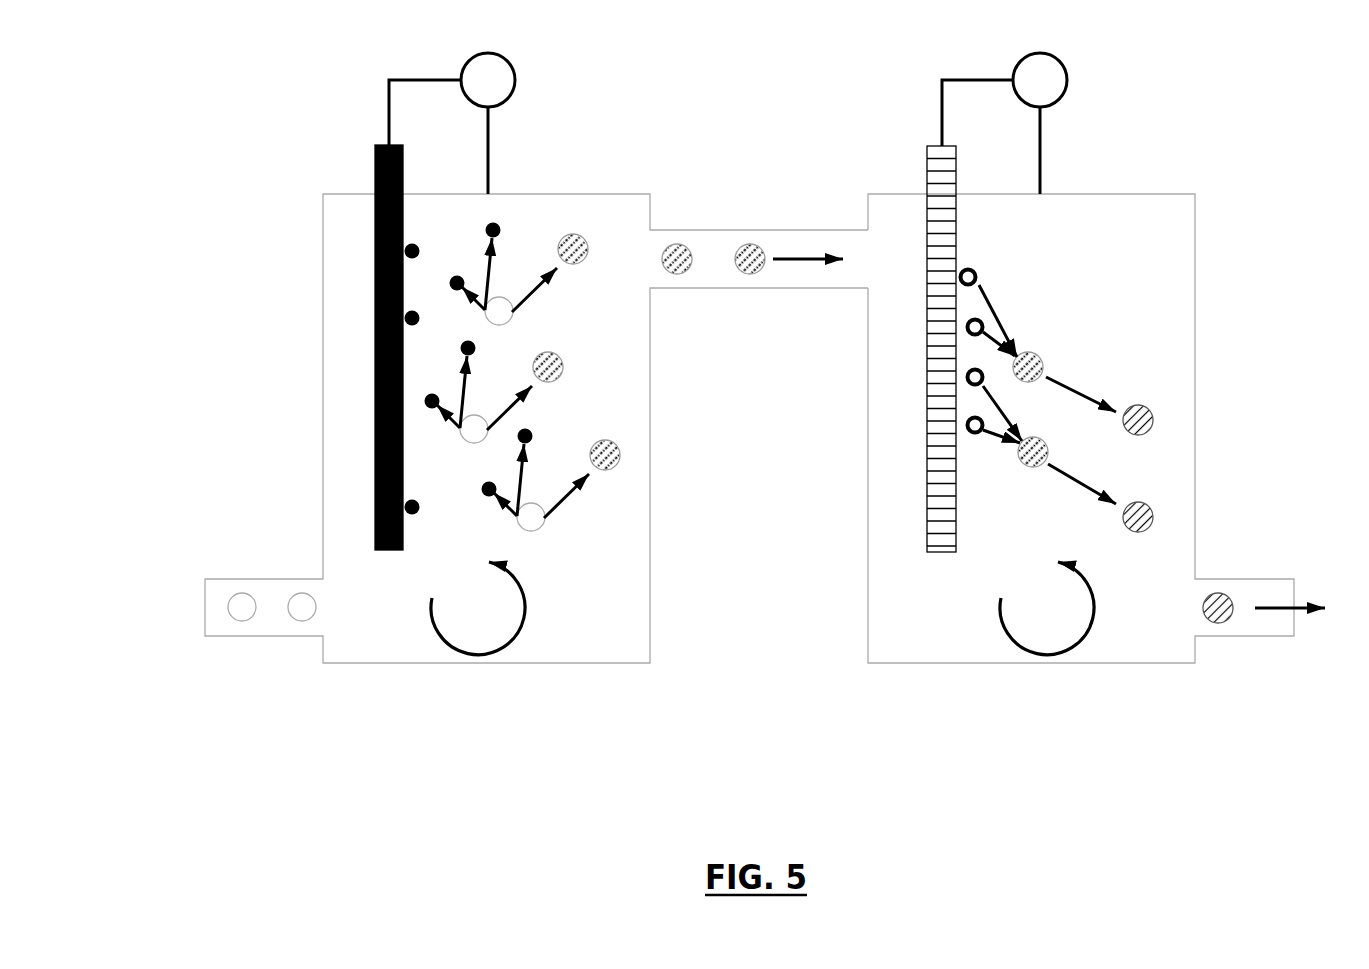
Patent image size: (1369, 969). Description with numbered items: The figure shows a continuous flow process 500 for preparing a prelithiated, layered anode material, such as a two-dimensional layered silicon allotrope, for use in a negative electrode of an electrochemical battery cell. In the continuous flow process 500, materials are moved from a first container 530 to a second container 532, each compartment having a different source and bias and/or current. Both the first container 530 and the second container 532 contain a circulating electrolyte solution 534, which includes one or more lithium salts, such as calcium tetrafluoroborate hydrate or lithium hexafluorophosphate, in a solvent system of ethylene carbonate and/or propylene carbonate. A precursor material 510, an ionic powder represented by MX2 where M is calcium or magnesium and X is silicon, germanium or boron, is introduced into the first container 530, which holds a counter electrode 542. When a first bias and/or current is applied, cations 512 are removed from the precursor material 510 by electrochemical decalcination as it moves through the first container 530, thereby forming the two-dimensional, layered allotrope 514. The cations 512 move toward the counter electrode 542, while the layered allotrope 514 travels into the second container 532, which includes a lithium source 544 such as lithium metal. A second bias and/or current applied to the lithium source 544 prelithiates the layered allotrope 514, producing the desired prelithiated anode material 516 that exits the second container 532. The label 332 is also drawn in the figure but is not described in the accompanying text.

The continuous flow process 500 is at (260, 118).
The precursor material 510 is at (297, 594).
The cations 512 is at (497, 222).
The two-dimensional, layered allotrope 514 is at (750, 245).
The prelithiated anode material 516 is at (1230, 596).
The first container 530 is at (595, 663).
The second container 532 is at (960, 663).
The circulating electrolyte solution 534 is at (631, 607).
The counter electrode 542 is at (375, 305).
The lithium source 544 is at (927, 380).
The ions 332 is at (970, 268).